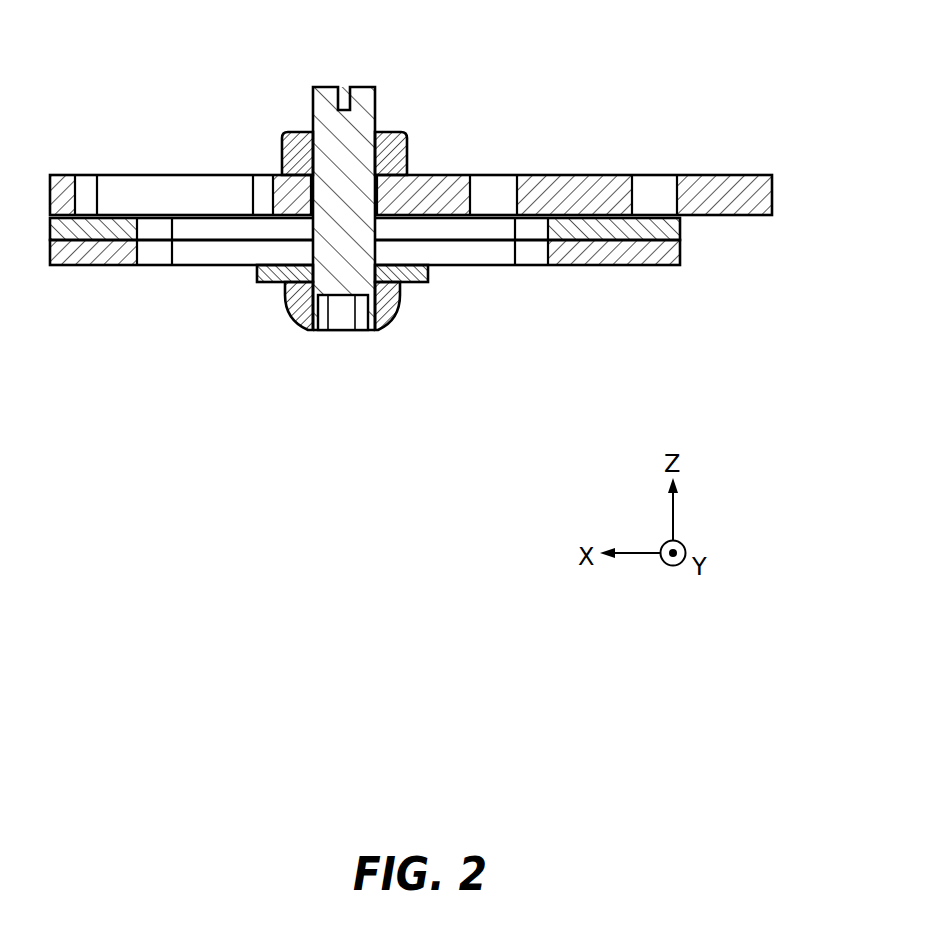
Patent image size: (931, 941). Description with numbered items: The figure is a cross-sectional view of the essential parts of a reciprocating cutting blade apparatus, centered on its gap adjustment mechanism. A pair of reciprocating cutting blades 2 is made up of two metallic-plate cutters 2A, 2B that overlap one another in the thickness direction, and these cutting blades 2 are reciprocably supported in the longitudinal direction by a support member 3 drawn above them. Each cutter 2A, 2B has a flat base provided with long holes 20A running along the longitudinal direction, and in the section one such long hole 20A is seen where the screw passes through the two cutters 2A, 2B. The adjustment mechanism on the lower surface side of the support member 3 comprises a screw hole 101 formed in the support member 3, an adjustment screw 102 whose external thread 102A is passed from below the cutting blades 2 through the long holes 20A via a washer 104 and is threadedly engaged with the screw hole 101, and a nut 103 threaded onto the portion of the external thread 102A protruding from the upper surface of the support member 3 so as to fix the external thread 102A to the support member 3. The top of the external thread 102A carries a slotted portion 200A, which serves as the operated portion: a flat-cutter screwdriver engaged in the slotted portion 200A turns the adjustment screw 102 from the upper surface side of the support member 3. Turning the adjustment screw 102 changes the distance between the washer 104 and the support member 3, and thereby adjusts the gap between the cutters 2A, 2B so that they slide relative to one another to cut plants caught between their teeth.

The support member 3 is at (705, 173).
The reciprocating cutting blades 2 is at (438, 274).
The cutter 2A is at (680, 232).
The cutter 2B is at (680, 262).
The long hole 20A is at (467, 230).
The slotted portion 200A is at (345, 172).
The external thread 102A is at (360, 37).
The screw hole 101 is at (330, 190).
The nut 103 is at (408, 139).
The washer 104 is at (257, 280).
The adjustment screw 102 is at (308, 333).